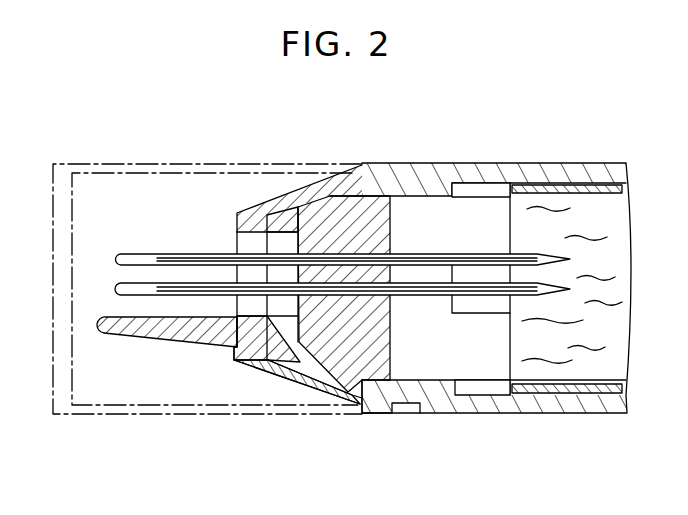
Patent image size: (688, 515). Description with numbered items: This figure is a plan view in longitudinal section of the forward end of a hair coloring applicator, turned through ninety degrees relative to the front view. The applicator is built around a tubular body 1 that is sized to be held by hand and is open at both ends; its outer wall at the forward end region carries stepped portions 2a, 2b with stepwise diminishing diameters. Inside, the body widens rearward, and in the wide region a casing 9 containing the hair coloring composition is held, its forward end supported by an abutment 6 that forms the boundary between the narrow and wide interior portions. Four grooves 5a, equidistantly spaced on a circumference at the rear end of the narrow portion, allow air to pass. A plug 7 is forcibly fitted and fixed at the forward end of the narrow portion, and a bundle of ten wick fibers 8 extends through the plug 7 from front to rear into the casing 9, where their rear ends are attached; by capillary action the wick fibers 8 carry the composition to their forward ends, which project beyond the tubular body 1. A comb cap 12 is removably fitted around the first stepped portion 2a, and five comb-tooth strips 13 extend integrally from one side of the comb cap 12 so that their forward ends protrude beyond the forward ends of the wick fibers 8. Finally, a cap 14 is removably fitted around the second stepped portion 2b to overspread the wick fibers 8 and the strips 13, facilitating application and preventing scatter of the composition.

The tubular body 1 is at (510, 407).
The stepped portion 2a is at (315, 381).
The stepped portion 2b is at (398, 404).
The grooves 5a is at (465, 272).
The abutment 6 is at (500, 187).
The plug 7 is at (347, 222).
The wick fibers 8 is at (162, 255).
The casing 9 is at (585, 372).
The comb cap 12 is at (253, 207).
The strips 13 is at (140, 331).
The cap 14 is at (89, 166).